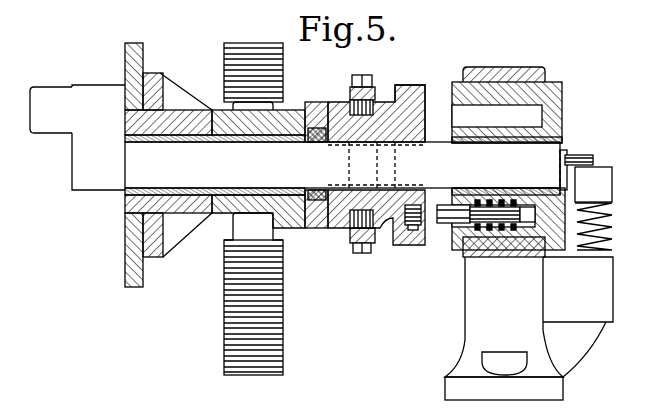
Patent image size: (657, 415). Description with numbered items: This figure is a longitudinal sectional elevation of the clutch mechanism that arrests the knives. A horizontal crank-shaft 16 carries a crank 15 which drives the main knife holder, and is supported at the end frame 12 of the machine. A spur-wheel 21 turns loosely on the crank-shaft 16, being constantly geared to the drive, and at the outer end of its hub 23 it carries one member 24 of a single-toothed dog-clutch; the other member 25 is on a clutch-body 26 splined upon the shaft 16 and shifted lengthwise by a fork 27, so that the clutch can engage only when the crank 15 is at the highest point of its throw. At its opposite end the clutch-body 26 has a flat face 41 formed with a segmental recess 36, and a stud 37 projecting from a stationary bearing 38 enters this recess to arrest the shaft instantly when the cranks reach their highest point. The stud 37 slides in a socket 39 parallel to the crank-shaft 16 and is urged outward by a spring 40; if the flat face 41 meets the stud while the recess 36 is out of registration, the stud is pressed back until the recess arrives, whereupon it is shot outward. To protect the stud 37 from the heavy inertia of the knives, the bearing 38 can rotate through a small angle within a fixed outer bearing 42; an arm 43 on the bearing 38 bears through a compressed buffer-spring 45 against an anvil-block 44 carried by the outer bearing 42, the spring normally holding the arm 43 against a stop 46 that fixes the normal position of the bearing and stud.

The end frame 12 is at (141, 48).
The crank 15 is at (77, 137).
The crank-shaft 16 is at (346, 168).
The spur-wheel 21 is at (283, 322).
The hub 23 is at (221, 232).
The dog-clutch member 24 is at (338, 218).
The dog-clutch member 25 is at (315, 103).
The clutch-body 26 is at (404, 86).
The fork 27 is at (360, 76).
The recess 36 is at (406, 245).
The stud 37 is at (447, 228).
The bearing 38 is at (562, 108).
The socket 39 is at (527, 222).
The spring 40 is at (490, 228).
The face 41 is at (425, 111).
The outer bearing 42 is at (506, 67).
The arm 43 is at (593, 184).
The anvil-block 44 is at (578, 317).
The buffer-spring 45 is at (612, 240).
The stop 46 is at (583, 155).